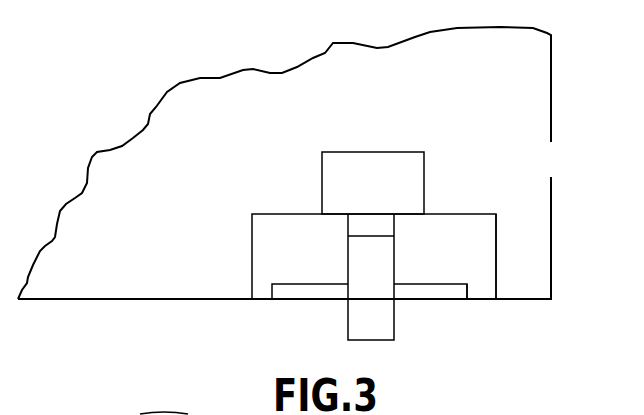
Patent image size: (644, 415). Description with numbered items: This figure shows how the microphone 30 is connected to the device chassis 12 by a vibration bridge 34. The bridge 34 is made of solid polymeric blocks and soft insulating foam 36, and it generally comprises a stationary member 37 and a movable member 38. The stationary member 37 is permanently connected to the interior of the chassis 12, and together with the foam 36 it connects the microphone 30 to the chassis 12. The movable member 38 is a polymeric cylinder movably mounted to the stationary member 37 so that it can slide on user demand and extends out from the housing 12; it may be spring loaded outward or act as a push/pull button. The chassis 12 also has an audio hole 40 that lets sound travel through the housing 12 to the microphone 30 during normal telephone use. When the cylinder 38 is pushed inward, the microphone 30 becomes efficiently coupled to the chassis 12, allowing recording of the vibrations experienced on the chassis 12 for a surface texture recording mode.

The chassis 12 is at (552, 82).
The audio hole 40 is at (550, 157).
The microphone 30 is at (393, 150).
The vibration bridge 34 is at (275, 320).
The soft insulating foam 36 is at (480, 282).
The stationary member 37 is at (320, 292).
The movable member 38 is at (395, 330).